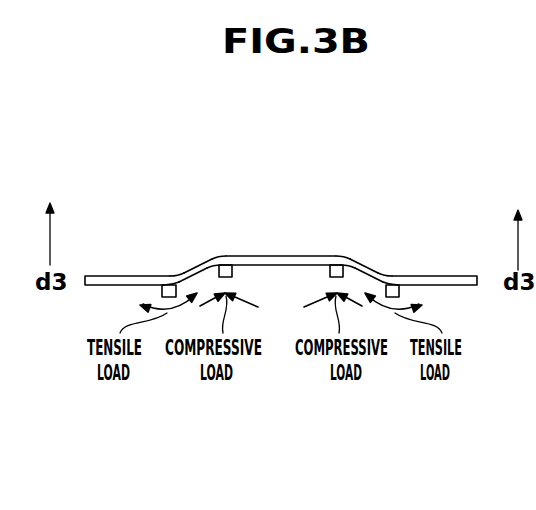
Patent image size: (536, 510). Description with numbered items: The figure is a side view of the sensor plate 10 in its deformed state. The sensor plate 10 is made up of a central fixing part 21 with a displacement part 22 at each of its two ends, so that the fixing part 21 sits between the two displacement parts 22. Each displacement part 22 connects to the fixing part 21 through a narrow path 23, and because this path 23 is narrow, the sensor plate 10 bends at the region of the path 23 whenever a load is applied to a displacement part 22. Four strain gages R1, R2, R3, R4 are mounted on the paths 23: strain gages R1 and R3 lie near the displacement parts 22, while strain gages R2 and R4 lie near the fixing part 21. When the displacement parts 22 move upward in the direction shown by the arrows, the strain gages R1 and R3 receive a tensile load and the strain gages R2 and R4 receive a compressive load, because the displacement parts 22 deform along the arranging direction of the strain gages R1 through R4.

The sensor plate 10 is at (283, 230).
The fixing part 21 is at (260, 257).
The displacement part 22 is at (105, 282).
The path 23 is at (200, 262).
The strain gage R1 is at (170, 277).
The strain gage R2 is at (220, 266).
The strain gage R3 is at (400, 276).
The strain gage R4 is at (343, 266).